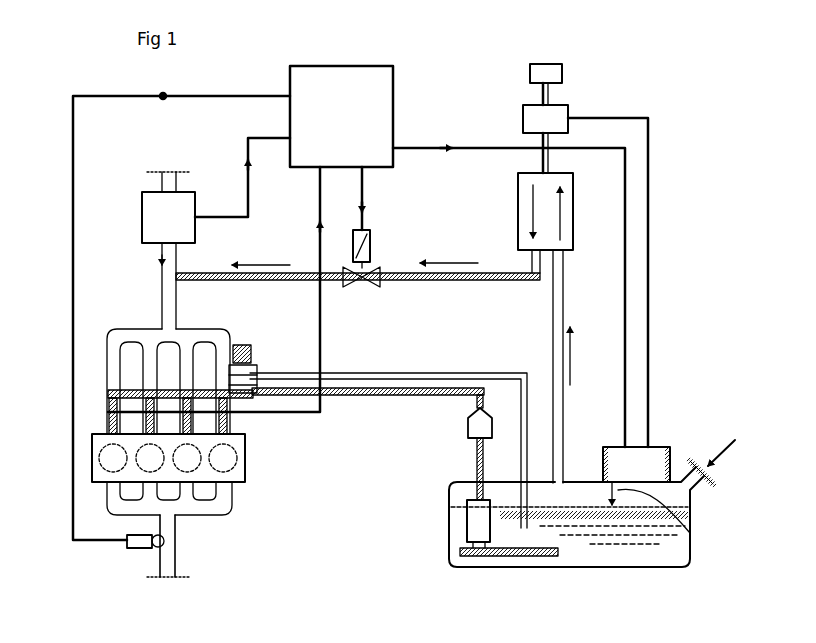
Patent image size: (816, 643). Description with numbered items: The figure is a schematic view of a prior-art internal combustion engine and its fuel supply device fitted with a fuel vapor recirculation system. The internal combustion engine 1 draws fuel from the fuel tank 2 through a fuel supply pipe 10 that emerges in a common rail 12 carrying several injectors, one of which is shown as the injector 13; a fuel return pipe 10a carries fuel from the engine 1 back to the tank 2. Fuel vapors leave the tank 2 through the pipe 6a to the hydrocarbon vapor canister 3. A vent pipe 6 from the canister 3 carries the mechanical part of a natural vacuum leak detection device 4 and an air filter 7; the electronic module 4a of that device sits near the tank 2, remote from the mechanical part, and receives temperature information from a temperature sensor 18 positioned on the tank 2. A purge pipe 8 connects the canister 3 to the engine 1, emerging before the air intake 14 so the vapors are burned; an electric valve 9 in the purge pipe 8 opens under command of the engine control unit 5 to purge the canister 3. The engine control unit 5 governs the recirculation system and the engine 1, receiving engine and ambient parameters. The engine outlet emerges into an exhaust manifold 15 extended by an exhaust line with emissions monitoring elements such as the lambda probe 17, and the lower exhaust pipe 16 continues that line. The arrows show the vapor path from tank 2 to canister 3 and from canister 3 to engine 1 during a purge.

The engine 1 is at (247, 483).
The fuel tank 2 is at (660, 540).
The hydrocarbon vapor canister 3 is at (518, 210).
The natural vacuum leak detection device 4 is at (568, 108).
The electronic module 4a is at (660, 447).
The engine control unit 5 is at (393, 115).
The vent pipe 6 is at (525, 155).
The fuel vapor pipe 6a is at (583, 283).
The air filter 7 is at (562, 72).
The purge pipe 8 is at (450, 282).
The electric valve 9 is at (358, 290).
The fuel supply pipe 10 is at (370, 396).
The fuel return pipe 10a is at (376, 372).
The common rail 12 is at (133, 390).
The injector 13 is at (112, 405).
The air intake 14 is at (150, 335).
The exhaust manifold 15 is at (205, 508).
The exhaust pipe 16 is at (172, 578).
The lambda probe 17 is at (122, 553).
The temperature sensor 18 is at (690, 533).